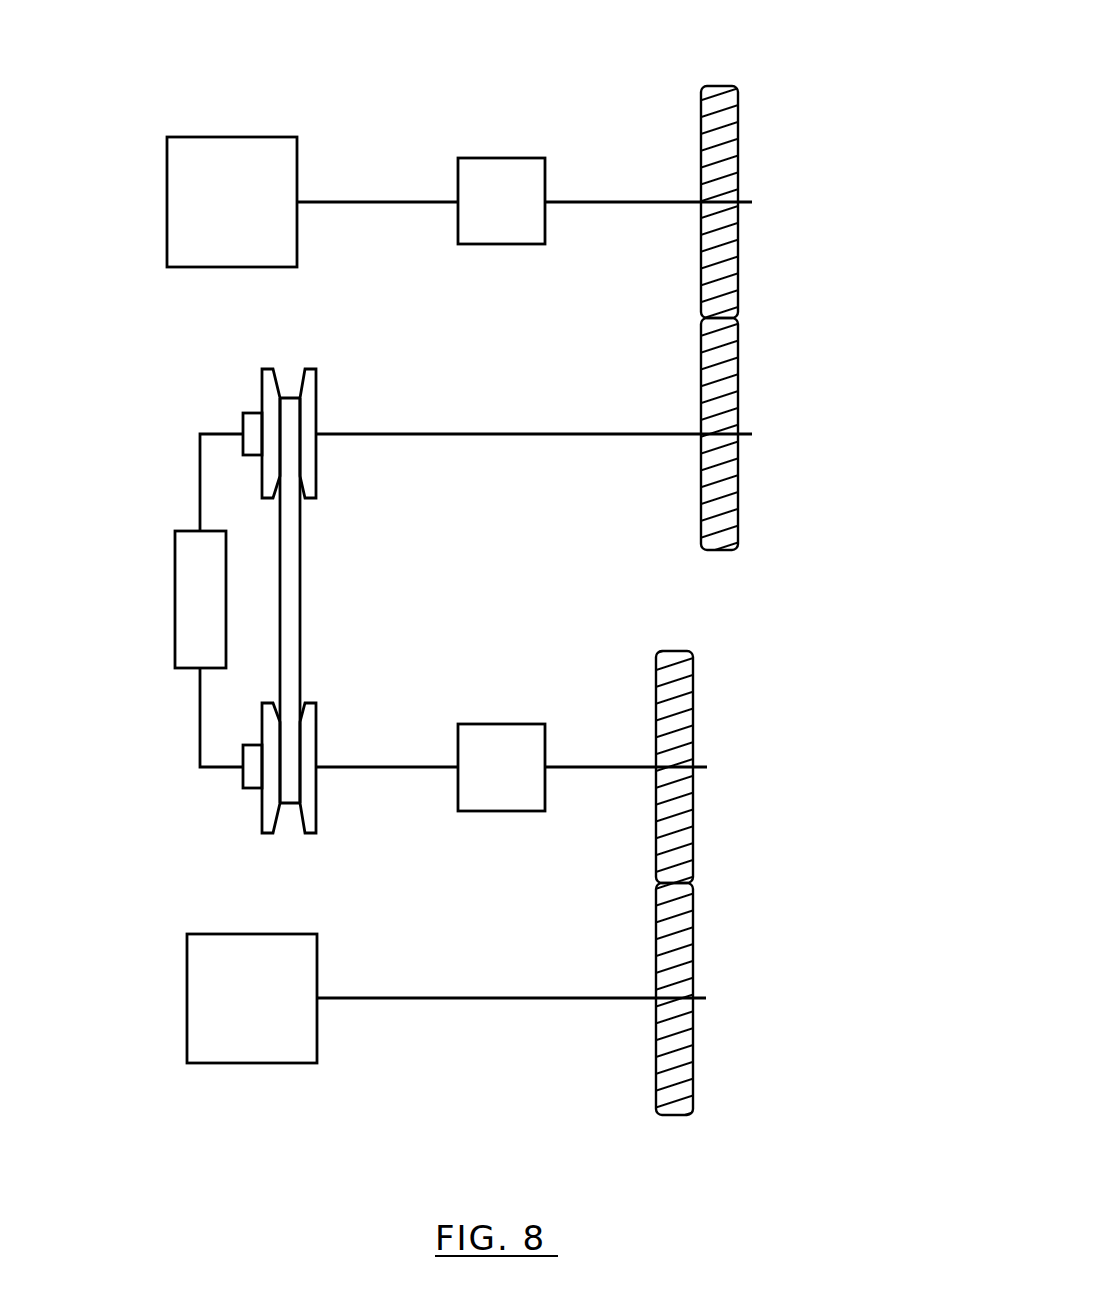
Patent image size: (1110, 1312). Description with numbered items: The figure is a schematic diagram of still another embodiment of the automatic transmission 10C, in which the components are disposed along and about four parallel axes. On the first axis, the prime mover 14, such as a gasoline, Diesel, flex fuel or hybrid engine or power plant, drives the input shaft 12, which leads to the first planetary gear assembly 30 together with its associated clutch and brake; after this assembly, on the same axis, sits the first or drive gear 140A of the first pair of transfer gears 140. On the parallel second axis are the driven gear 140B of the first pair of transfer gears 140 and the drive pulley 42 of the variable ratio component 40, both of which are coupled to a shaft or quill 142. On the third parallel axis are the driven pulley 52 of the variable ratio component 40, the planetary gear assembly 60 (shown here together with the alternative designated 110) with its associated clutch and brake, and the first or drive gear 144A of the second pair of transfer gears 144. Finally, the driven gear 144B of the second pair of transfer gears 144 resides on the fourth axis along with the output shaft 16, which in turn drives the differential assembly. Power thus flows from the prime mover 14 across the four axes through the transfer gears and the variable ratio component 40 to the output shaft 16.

The automatic transmission 10C is at (136, 478).
The prime mover 14 is at (241, 217).
The input shaft 12 is at (362, 201).
The first planetary gear assembly 30 is at (510, 139).
The first pair of transfer gears 140 is at (782, 280).
The first or drive gear 140A is at (726, 140).
The driven gear 140B is at (724, 482).
The shaft or quill 142 is at (552, 433).
The variable ratio component 40 is at (128, 665).
The drive pulley 42 is at (277, 405).
The driven pulley 52 is at (268, 805).
The planetary gear assembly 60 is at (526, 714).
The torque limiter 110 is at (501, 767).
The second pair of transfer gears 144 is at (757, 883).
The first or drive gear 144A is at (680, 692).
The driven gear 144B is at (680, 1031).
The output shaft 16 is at (529, 997).